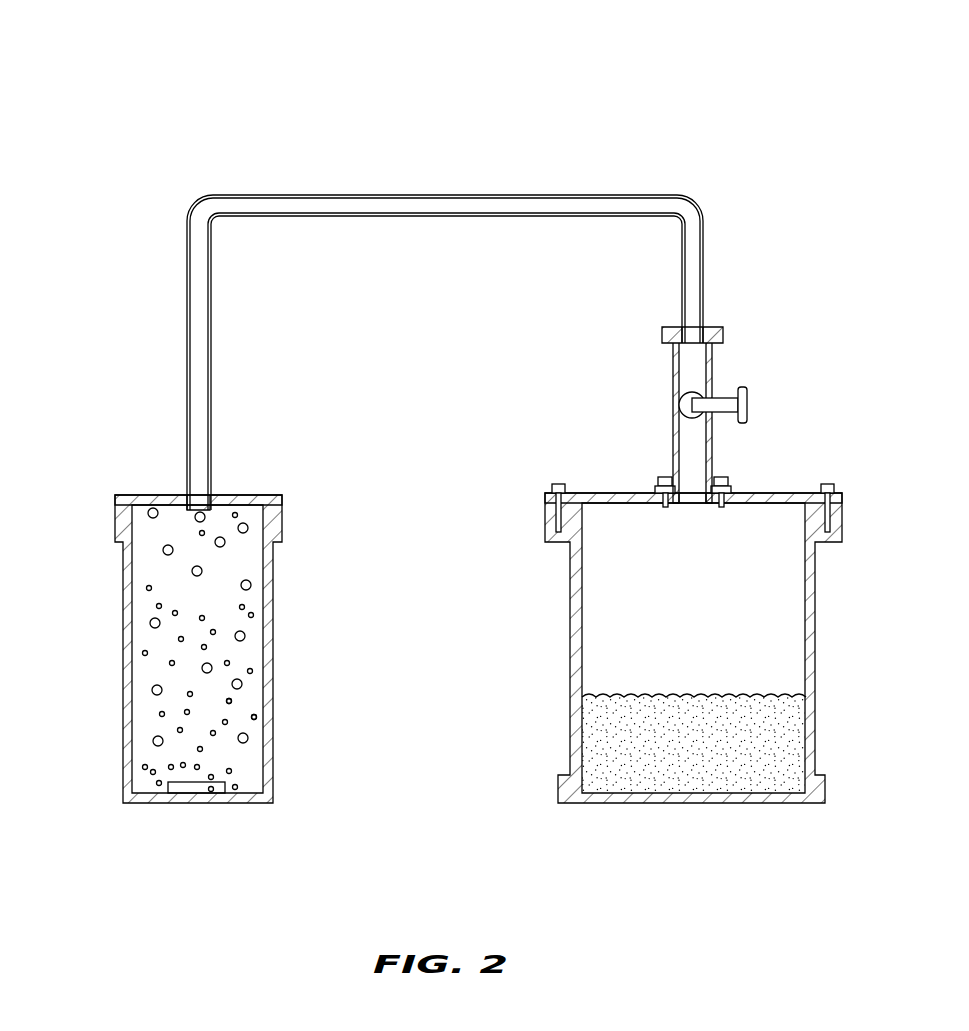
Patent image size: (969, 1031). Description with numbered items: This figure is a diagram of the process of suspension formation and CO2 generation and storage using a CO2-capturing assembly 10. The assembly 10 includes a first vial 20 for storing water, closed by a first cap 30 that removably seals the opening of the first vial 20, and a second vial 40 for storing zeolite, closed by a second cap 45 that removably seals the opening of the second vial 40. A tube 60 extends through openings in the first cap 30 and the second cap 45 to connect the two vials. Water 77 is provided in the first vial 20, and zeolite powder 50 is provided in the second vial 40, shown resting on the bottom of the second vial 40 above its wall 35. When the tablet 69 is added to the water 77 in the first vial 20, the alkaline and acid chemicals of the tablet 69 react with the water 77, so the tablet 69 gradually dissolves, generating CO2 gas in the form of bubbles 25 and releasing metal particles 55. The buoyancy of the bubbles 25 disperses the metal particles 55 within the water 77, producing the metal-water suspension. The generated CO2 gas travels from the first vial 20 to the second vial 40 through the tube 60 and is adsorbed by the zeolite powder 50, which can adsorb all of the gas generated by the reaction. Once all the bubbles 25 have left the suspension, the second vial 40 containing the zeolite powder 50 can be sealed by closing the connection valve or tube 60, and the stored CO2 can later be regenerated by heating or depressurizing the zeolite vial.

The CO2-capturing assembly 10 is at (807, 88).
The first vial 20 is at (95, 822).
The CO2 gas bubbles 25 is at (163, 551).
The first cap 30 is at (257, 493).
The second vessel body 35 is at (572, 738).
The second vial 40 is at (503, 582).
The second cap 45 is at (792, 493).
The zeolite powder 50 is at (766, 694).
The metal particles 55 is at (232, 700).
The tube 60 is at (560, 193).
The tablet 69 is at (200, 797).
The water 77 is at (147, 671).